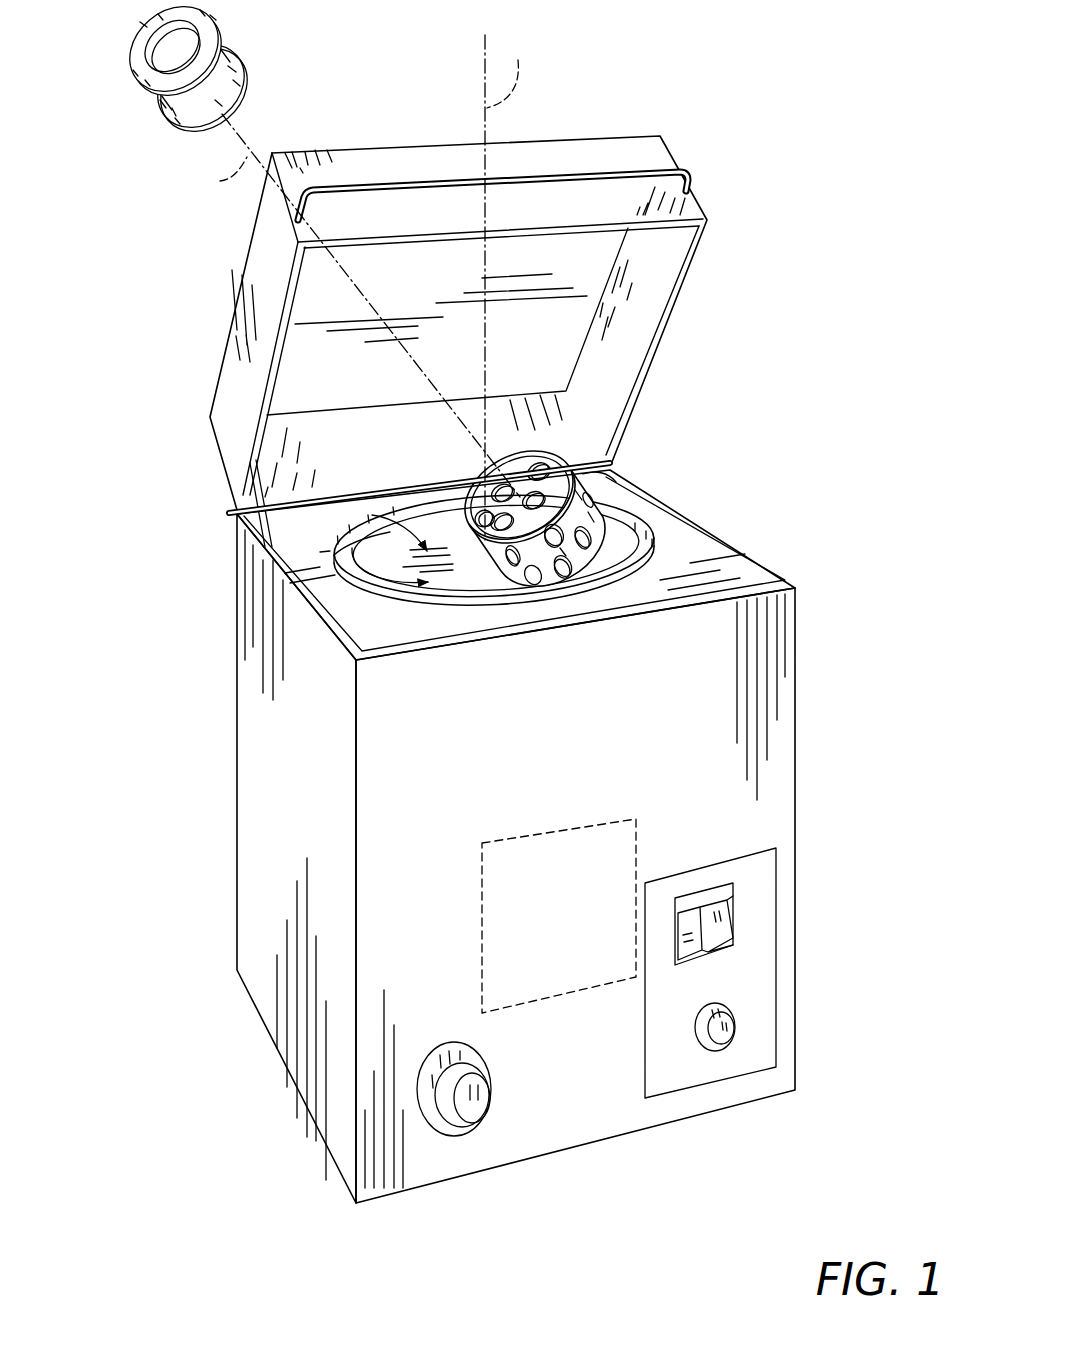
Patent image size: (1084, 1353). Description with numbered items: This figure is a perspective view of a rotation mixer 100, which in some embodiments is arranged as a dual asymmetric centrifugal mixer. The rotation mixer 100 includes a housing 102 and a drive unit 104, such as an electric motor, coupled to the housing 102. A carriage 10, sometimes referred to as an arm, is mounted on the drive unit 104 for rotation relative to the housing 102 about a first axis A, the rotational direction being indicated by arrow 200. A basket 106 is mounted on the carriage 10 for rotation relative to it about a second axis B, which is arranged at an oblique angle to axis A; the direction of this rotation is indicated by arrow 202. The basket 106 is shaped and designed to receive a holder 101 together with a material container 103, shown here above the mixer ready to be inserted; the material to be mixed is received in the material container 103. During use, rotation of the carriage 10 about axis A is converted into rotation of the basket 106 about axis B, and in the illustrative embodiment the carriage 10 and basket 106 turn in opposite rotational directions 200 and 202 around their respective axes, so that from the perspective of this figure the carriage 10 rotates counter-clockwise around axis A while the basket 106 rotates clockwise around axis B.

The rotation mixer 100 is at (814, 156).
The holder 101 is at (230, 64).
The material container 103 is at (152, 57).
The housing 102 is at (766, 748).
The drive unit 104 is at (558, 1003).
The basket 106 is at (612, 513).
The carriage 10 is at (297, 533).
The arrow 200 is at (353, 572).
The arrow 202 is at (616, 502).